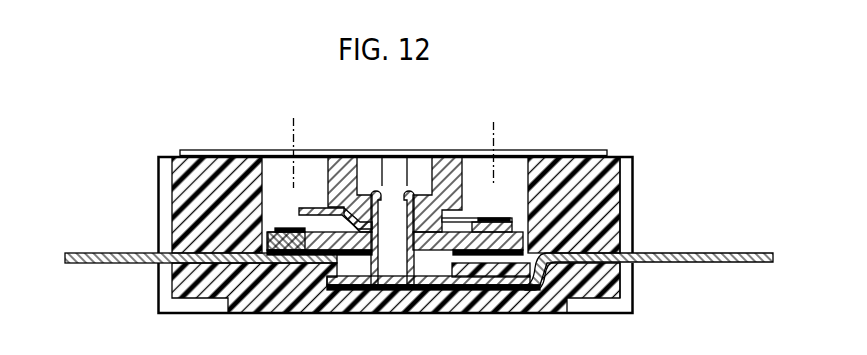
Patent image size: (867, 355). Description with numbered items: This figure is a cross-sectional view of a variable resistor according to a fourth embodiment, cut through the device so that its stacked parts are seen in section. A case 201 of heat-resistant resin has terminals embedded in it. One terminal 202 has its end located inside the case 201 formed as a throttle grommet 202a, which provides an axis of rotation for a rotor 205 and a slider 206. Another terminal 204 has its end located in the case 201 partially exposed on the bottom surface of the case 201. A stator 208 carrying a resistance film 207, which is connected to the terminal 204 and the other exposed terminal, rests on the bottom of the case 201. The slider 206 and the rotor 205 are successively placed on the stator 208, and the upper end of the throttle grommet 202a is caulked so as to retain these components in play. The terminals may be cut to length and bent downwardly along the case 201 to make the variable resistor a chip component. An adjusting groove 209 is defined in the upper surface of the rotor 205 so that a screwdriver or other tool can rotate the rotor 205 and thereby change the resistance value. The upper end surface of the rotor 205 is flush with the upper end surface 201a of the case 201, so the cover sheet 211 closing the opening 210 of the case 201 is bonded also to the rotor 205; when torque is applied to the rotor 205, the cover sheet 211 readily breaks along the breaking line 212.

The case 201 is at (637, 193).
The upper end surface 201a is at (623, 155).
The terminal 202 is at (668, 262).
The throttle grommet 202a is at (370, 165).
The terminal 204 is at (122, 265).
The rotor 205 is at (442, 167).
The slider 206 is at (310, 200).
The resistance film 207 is at (288, 228).
The stator 208 is at (267, 237).
The adjusting groove 209 is at (395, 160).
The opening 210 is at (272, 158).
The cover sheet 211 is at (553, 150).
The breaking line 212 is at (293, 128).